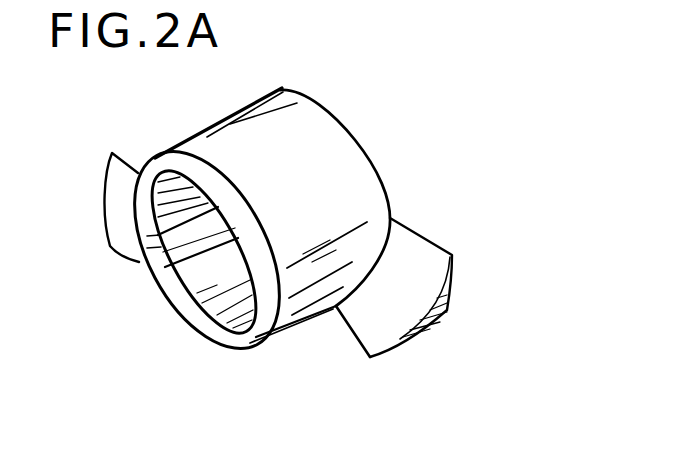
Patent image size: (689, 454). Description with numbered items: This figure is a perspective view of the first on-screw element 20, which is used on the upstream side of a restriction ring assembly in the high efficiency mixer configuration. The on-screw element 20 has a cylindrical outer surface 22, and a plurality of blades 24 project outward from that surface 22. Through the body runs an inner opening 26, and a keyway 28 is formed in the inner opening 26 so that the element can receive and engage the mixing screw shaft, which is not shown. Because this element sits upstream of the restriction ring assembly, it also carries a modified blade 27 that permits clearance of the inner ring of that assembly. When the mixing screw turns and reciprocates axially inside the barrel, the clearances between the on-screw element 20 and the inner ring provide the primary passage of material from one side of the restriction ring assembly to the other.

The on-screw element 20 is at (373, 146).
The cylindrical outer surface 22 is at (218, 133).
The blades 24 is at (121, 152).
The inner opening 26 is at (200, 288).
The modified blade 27 is at (437, 253).
The keyway 28 is at (151, 239).